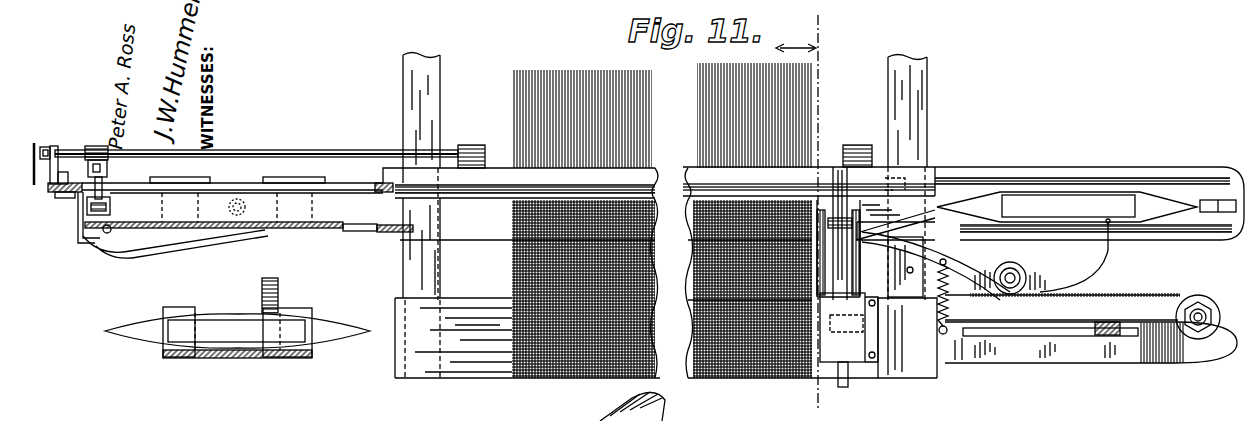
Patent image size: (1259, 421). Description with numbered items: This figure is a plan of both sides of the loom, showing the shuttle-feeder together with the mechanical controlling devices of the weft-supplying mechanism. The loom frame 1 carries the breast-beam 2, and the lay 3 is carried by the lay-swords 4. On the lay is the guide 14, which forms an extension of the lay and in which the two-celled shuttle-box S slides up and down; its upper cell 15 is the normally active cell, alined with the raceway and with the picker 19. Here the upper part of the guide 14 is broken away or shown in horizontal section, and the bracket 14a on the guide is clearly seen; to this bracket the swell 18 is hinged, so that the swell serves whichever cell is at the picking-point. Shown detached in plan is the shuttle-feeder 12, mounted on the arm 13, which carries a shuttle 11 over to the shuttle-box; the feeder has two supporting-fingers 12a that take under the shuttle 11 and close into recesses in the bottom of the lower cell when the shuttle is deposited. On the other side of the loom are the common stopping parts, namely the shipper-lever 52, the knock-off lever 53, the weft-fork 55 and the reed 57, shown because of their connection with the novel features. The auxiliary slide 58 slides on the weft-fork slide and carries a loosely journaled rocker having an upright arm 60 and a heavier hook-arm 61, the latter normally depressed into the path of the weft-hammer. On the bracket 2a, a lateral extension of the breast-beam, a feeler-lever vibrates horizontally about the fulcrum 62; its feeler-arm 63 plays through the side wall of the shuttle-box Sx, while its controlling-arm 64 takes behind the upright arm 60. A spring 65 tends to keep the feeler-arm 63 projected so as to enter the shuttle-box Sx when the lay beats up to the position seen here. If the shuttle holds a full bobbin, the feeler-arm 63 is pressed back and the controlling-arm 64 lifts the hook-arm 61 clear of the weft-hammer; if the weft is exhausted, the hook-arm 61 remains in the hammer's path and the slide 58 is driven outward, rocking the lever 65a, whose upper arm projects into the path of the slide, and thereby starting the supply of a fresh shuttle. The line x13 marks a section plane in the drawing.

The loom frame 1 is at (928, 121).
The breast-beam 2 is at (466, 380).
The bracket 2a is at (1165, 296).
The lay 3 is at (1003, 167).
The lay-swords 4 is at (467, 145).
The shuttle 11 is at (237, 331).
The shuttle-feeder 12 is at (237, 365).
The supporting-fingers 12a is at (183, 307).
The arm 13 is at (276, 296).
The guide 14 is at (130, 182).
The bracket 14a is at (85, 228).
The upper shuttle-cell 15 is at (281, 195).
The swell 18 is at (277, 224).
The picker 19 is at (113, 205).
The shipper-lever 52 is at (1105, 338).
The knock-off lever 53 is at (1062, 306).
The weft-fork 55 is at (835, 233).
The reed 57 is at (603, 242).
The auxiliary slide 58 is at (849, 327).
The upright arm 60 is at (858, 217).
The hook-arm 61 is at (845, 271).
The fulcrum 62 is at (1010, 266).
The feeler-arm 63 is at (1092, 255).
The controlling-arm 64 is at (948, 262).
The spring 65 is at (948, 301).
The lever 65a is at (850, 383).
The two-celled shuttle-box S is at (237, 189).
The shuttle-box Sx is at (1112, 178).
The section line x13 is at (817, 212).